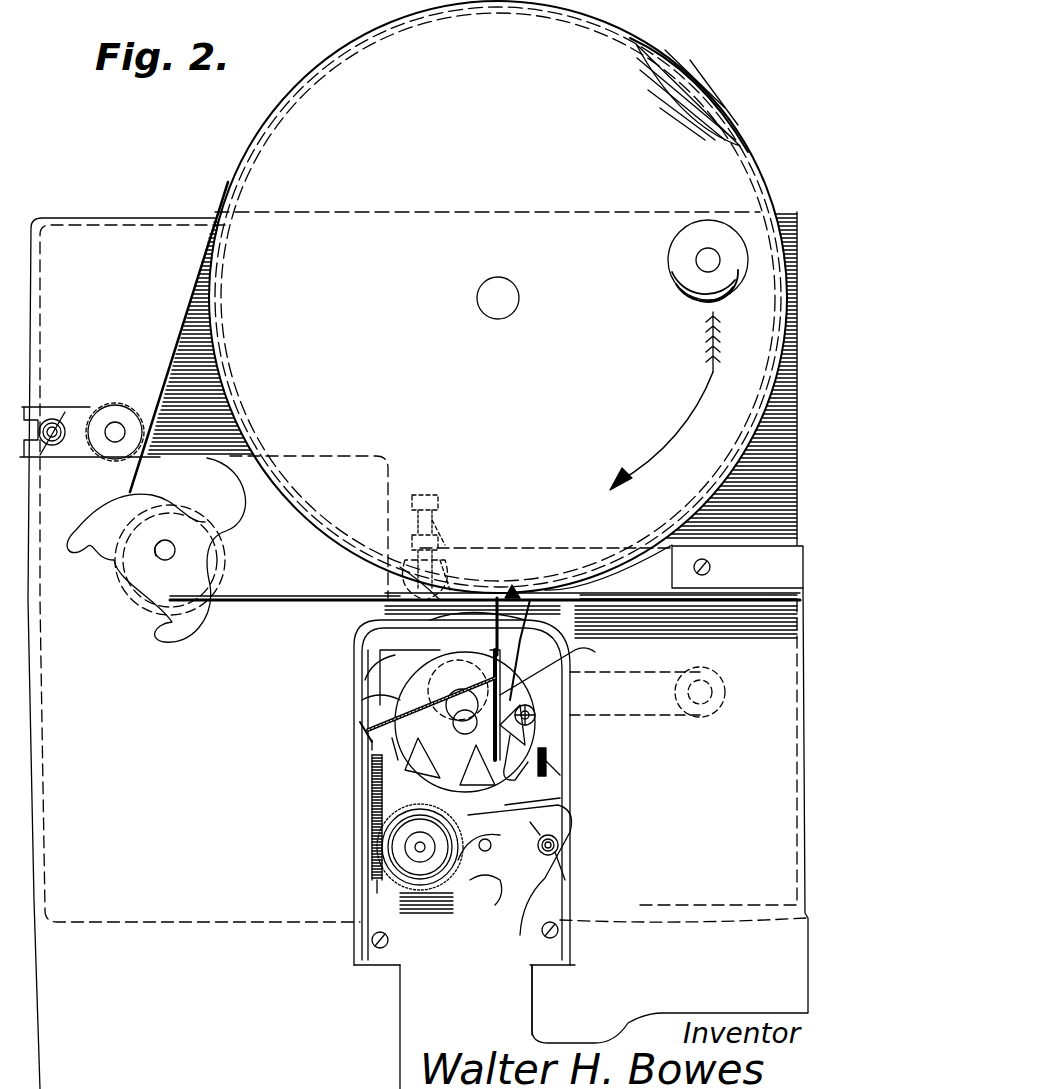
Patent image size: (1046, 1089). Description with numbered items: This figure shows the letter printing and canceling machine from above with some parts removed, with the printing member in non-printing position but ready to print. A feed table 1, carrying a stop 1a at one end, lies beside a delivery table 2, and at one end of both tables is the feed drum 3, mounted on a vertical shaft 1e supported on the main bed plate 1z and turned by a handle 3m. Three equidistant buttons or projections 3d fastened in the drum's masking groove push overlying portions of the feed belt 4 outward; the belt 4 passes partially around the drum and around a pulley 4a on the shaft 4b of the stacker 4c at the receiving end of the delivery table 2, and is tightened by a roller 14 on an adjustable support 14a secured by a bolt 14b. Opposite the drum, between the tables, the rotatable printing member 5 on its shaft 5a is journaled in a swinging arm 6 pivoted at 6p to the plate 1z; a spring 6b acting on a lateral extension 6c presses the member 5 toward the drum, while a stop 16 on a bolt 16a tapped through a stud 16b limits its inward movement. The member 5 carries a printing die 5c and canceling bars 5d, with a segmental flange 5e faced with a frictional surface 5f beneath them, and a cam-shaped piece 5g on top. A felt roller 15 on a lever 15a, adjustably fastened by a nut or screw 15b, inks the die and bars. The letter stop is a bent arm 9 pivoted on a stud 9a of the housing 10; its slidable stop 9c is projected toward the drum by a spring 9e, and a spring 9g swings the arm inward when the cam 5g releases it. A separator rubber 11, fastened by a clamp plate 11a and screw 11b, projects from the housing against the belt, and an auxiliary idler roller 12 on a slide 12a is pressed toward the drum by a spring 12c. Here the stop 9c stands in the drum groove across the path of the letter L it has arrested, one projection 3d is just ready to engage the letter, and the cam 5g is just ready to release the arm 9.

The feed table 1 is at (730, 846).
The stop 1a is at (718, 592).
The vertical shaft 1e is at (480, 304).
The main bed plate 1z is at (752, 488).
The delivery table 2 is at (192, 842).
The feed drum 3 is at (287, 163).
The buttons or projections 3d is at (690, 88).
The handle 3m is at (676, 258).
The feed belt 4 is at (720, 113).
The pulley 4a is at (213, 586).
The shaft 4b is at (179, 556).
The stacker 4c is at (228, 525).
The rotatable printing member 5 is at (355, 700).
The shaft 5a is at (397, 746).
The printing die 5c is at (560, 755).
The canceling bars 5d is at (512, 596).
The segmental flange 5e is at (328, 746).
The frictional surface 5f is at (358, 684).
The cam-shaped piece 5g is at (378, 626).
The swinging arm 6 is at (580, 716).
The spring 6b is at (517, 902).
The lateral extension 6c is at (503, 895).
The pivot 6p is at (712, 708).
The bent arm 9 is at (566, 661).
The stud 9a is at (590, 692).
The slidable stop 9c is at (497, 596).
The spring 9e is at (400, 567).
The spring 9g is at (355, 708).
The housing 10 is at (536, 713).
The separator rubber 11 is at (530, 600).
The clamp plate 11a is at (560, 812).
The screw 11b is at (568, 775).
The auxiliary idler roller 12 is at (368, 598).
The slide 12a is at (355, 742).
The spring 12c is at (367, 804).
The roller 14 is at (116, 405).
The adjustable support 14a is at (78, 407).
The bolt 14b is at (52, 448).
The felt roller 15 is at (398, 838).
The lever 15a is at (490, 862).
The nut or screw 15b is at (562, 876).
The stop 16 is at (456, 590).
The bolt 16a is at (437, 520).
The stud 16b is at (446, 556).
The letter L is at (672, 618).